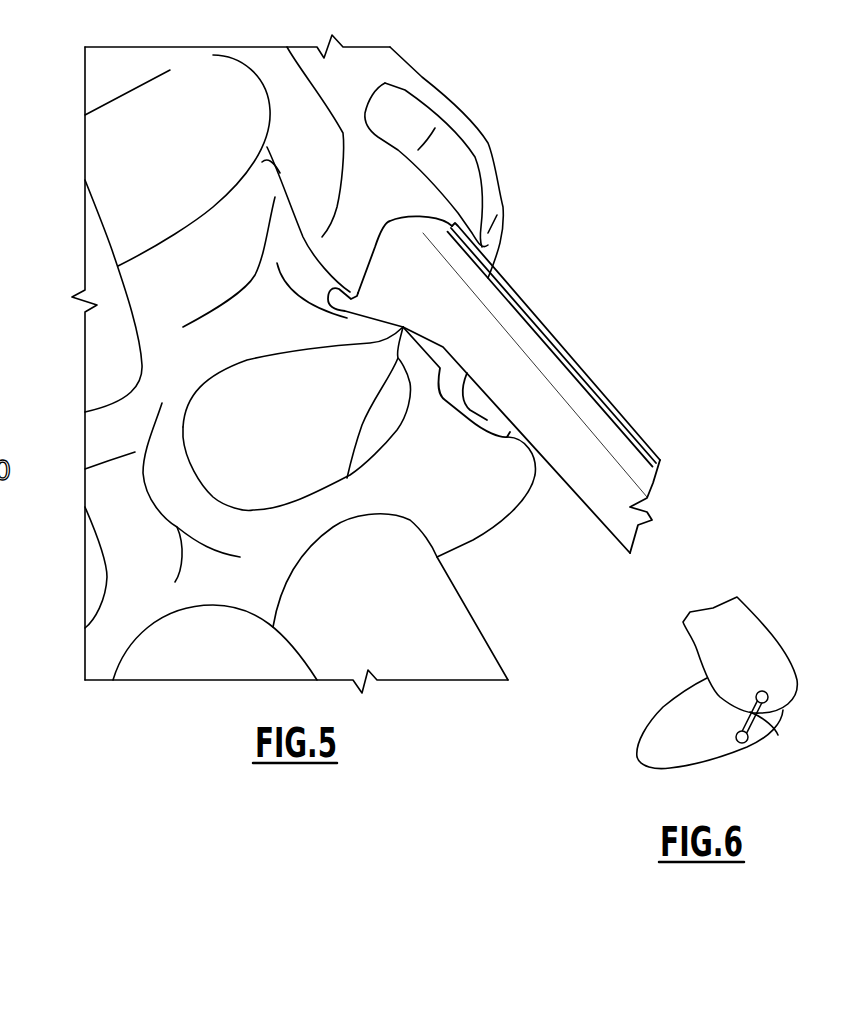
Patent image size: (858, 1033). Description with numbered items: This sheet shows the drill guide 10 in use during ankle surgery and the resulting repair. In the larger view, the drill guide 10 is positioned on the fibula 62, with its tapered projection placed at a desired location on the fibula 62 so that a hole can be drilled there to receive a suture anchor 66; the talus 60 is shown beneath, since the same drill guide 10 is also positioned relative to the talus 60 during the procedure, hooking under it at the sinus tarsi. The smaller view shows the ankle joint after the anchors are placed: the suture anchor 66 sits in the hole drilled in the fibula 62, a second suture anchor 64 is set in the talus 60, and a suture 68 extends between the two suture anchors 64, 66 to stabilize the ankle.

In FIG. 5, the drill guide 10 is at (568, 388).
In FIG. 5, the talus 60 is at (250, 323).
In FIG. 6, the talus 60 is at (652, 735).
In FIG. 5, the fibula 62 is at (313, 130).
In FIG. 6, the fibula 62 is at (760, 630).
In FIG. 6, the suture anchor 64 is at (753, 747).
In FIG. 6, the suture anchor 66 is at (768, 692).
In FIG. 6, the suture 68 is at (770, 730).